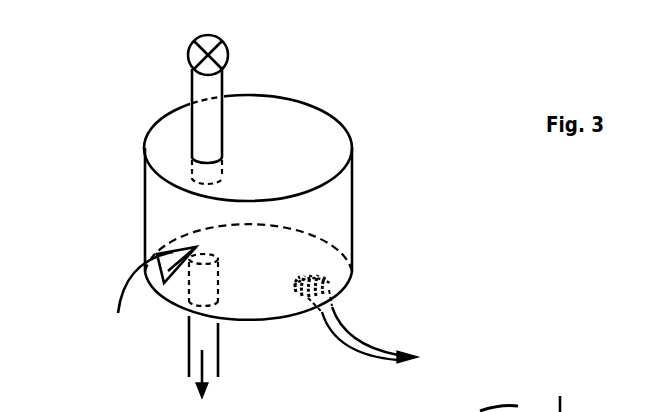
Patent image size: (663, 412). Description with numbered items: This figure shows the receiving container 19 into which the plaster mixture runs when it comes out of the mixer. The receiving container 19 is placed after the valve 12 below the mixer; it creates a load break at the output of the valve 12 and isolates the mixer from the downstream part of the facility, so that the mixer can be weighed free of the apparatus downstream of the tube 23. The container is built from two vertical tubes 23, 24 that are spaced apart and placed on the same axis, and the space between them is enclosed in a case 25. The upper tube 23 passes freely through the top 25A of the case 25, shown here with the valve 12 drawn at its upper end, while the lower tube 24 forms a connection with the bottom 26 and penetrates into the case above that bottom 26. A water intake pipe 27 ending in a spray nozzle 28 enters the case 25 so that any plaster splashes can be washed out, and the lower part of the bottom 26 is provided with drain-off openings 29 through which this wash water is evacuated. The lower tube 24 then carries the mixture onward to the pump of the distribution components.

The valve 12 is at (230, 57).
The receiving container 19 is at (130, 158).
The tube 23 is at (213, 117).
The tube 24 is at (218, 352).
The case 25 is at (347, 183).
The top 25A is at (317, 148).
The bottom 26 is at (288, 243).
The water intake pipe 27 is at (124, 269).
The spray nozzle 28 is at (173, 255).
The drain-off openings 29 is at (336, 281).